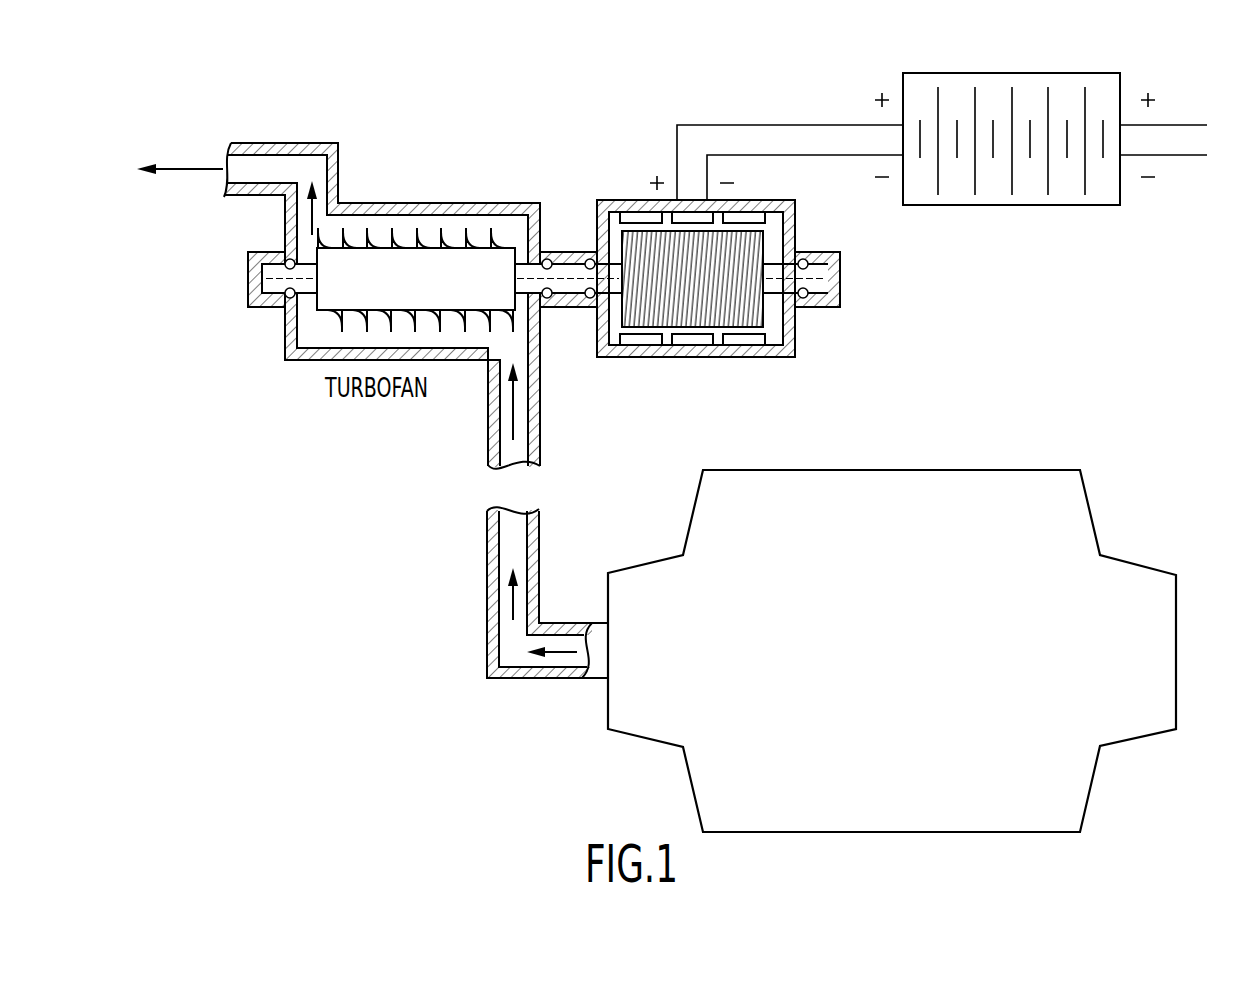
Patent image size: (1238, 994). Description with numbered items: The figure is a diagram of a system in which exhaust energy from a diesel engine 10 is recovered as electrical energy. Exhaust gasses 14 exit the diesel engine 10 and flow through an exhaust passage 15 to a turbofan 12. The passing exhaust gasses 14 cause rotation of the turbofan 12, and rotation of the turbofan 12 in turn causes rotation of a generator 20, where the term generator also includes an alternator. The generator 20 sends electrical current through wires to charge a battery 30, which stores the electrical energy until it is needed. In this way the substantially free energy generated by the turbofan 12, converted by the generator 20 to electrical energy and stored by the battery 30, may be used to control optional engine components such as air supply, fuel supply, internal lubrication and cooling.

The diesel engine 10 is at (1091, 514).
The turbofan 12 is at (435, 277).
The exhaust gasses 14 is at (190, 168).
The exhaust passage 15 is at (282, 142).
The generator 20 is at (795, 333).
The battery 30 is at (1012, 205).